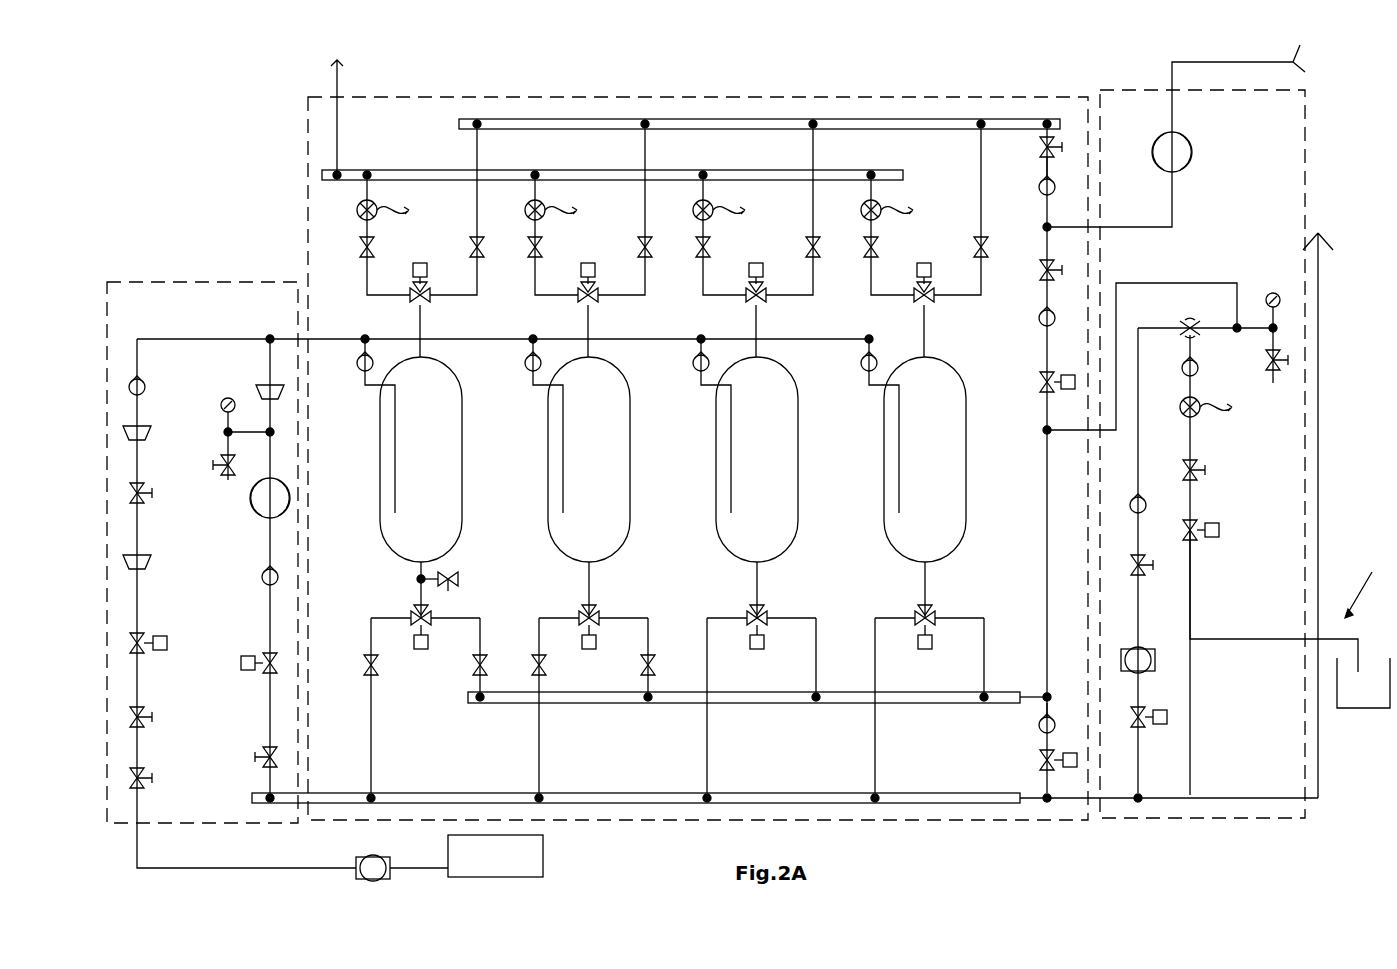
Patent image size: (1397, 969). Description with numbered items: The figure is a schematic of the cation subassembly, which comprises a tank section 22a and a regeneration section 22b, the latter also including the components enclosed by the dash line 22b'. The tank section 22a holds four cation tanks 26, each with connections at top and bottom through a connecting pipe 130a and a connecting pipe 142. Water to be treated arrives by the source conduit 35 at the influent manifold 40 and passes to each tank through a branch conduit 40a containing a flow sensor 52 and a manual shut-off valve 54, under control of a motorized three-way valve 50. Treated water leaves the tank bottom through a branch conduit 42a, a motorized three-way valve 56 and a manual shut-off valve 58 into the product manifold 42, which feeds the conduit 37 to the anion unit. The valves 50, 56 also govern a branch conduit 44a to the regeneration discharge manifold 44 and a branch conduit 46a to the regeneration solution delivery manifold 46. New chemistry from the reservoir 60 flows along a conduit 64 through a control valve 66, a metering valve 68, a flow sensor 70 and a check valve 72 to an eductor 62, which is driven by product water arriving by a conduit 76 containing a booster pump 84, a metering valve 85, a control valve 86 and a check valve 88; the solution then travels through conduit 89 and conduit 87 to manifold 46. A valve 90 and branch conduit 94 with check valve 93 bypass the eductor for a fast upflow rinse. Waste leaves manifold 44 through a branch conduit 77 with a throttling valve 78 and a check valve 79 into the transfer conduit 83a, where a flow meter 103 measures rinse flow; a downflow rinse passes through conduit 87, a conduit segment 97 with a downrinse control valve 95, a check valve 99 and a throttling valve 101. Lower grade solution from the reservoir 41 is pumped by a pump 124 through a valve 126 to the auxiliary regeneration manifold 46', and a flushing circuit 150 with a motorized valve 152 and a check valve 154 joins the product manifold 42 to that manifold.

The tank section 22a is at (700, 97).
The regeneration section 22b is at (1242, 454).
The portion of the regeneration section 22b' is at (202, 521).
The cation tank 26 is at (673, 433).
The source conduit 35 is at (340, 72).
The conduit 37 is at (1320, 343).
The influent manifold 40 is at (388, 170).
The branch conduit 40a is at (367, 282).
The reservoir 41 is at (495, 856).
The product manifold 42 is at (940, 803).
The branch conduit 42a is at (371, 755).
The regeneration discharge manifold 44 is at (531, 119).
The branch conduit 44a is at (436, 300).
The regeneration solution delivery manifold 46 is at (757, 726).
The auxiliary regeneration manifold 46' is at (505, 324).
The branch conduit 46a is at (432, 613).
The motorized three-way valve 50 is at (420, 263).
The flow sensor 52 is at (358, 206).
The manual shut-off valve 54 is at (360, 247).
The motorized three-way valve 56 is at (421, 649).
The manual shut-off valve 58 is at (365, 665).
The reservoir of new regeneration chemistry 60 is at (1363, 683).
The eductor 62 is at (1183, 322).
The conduit 64 is at (1210, 600).
The control valve 66 is at (1220, 528).
The metering valve 68 is at (1196, 463).
The flow sensor 70 is at (1200, 400).
The check valve 72 is at (1198, 366).
The conduit 76 is at (1140, 415).
The branch conduit 77 is at (1045, 170).
The throttling valve 78 is at (1038, 147).
The check valve 79 is at (1038, 188).
The transfer conduit 83a is at (1172, 197).
The booster pump 84 is at (1155, 663).
The metering valve 85 is at (1140, 572).
The control valve 86 is at (1168, 718).
The conduit 87 is at (1045, 520).
The check valve 88 is at (1146, 506).
The conduit 89 is at (1182, 283).
The valve 90 is at (1077, 758).
The check valve 93 is at (1040, 722).
The branch conduit 94 is at (1051, 704).
The downrinse control valve 95 is at (1040, 392).
The conduit segment 97 is at (1047, 350).
The check valve 99 is at (1040, 325).
The throttling valve 101 is at (1040, 268).
The flow meter 103 is at (1178, 136).
The pump 124 is at (365, 858).
The valve 126 is at (168, 636).
The connecting pipe 130a is at (428, 355).
The connecting pipe 142 is at (590, 585).
The flushing circuit 150 is at (239, 603).
The motorized valve 152 is at (243, 668).
The check valve 154 is at (280, 575).